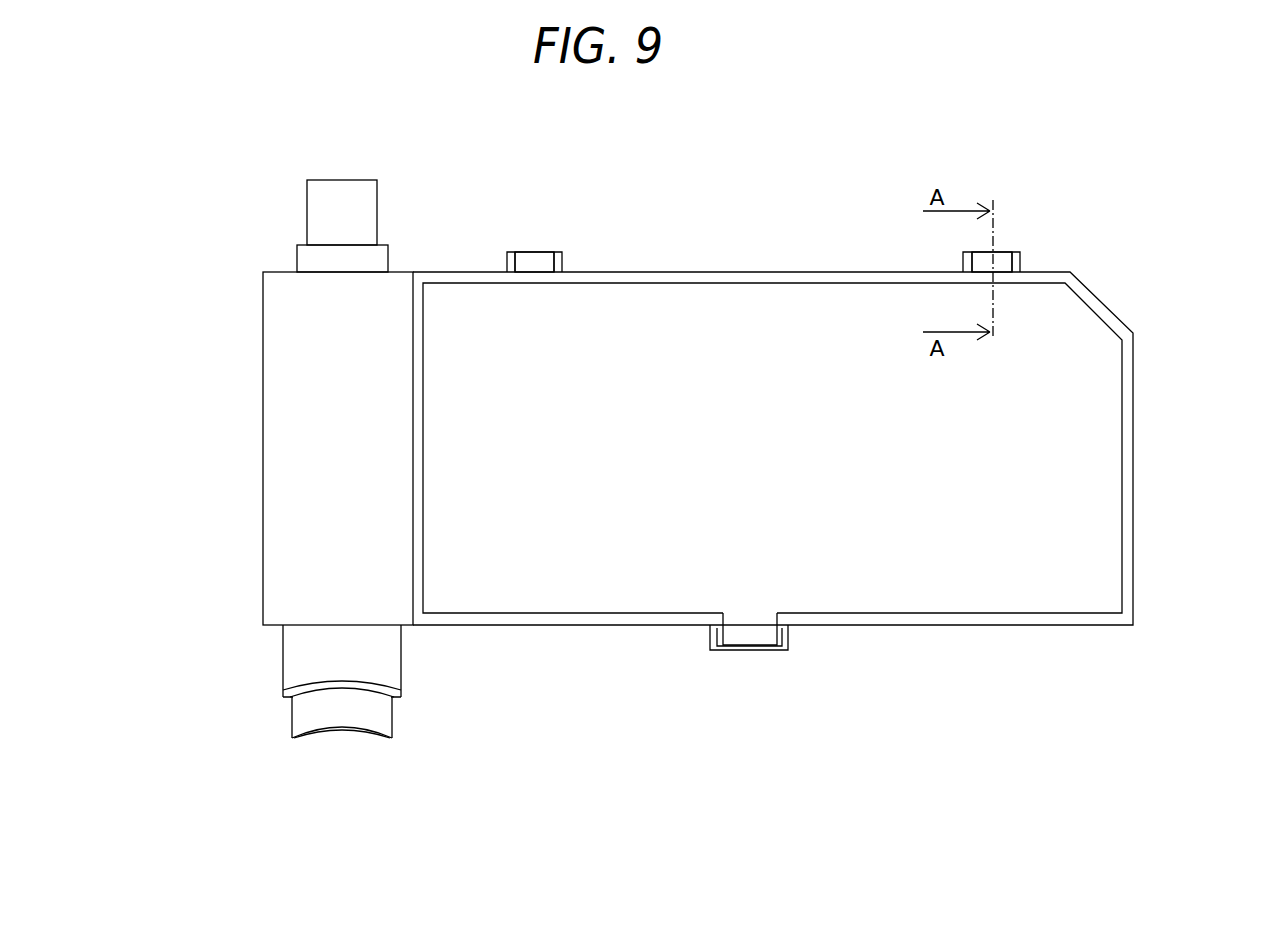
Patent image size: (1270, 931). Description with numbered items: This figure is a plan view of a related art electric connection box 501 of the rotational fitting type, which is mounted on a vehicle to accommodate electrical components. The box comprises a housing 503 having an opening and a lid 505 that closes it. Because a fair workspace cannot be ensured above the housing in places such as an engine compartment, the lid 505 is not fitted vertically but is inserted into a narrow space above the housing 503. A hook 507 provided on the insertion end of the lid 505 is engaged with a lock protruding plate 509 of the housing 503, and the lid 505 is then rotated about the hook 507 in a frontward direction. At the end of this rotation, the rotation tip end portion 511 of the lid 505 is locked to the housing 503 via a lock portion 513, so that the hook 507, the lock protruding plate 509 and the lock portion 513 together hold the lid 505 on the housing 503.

The electric connection box 501 is at (288, 136).
The housing 503 is at (248, 348).
The lid 505 is at (1154, 510).
The hook 507 is at (508, 262).
The lock protruding plate 509 is at (534, 262).
The rotation tip end portion 511 is at (596, 596).
The lock portion 513 is at (750, 633).